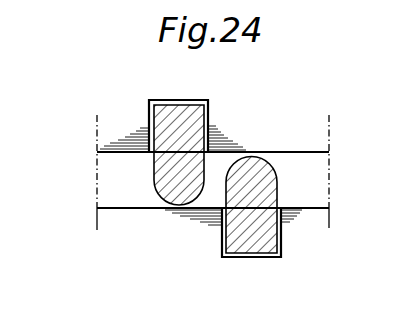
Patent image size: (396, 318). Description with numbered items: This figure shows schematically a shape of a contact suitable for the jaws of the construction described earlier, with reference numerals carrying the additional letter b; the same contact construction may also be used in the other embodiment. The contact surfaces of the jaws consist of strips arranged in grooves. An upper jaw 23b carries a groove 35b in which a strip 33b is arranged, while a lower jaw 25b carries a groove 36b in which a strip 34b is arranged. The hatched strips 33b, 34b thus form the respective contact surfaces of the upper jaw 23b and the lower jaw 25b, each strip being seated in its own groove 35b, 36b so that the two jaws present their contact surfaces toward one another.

The upper jaw 23b is at (107, 124).
The lower jaw 25b is at (110, 220).
The strip 33b is at (170, 176).
The strip 34b is at (266, 190).
The groove 35b is at (209, 118).
The groove 36b is at (223, 237).